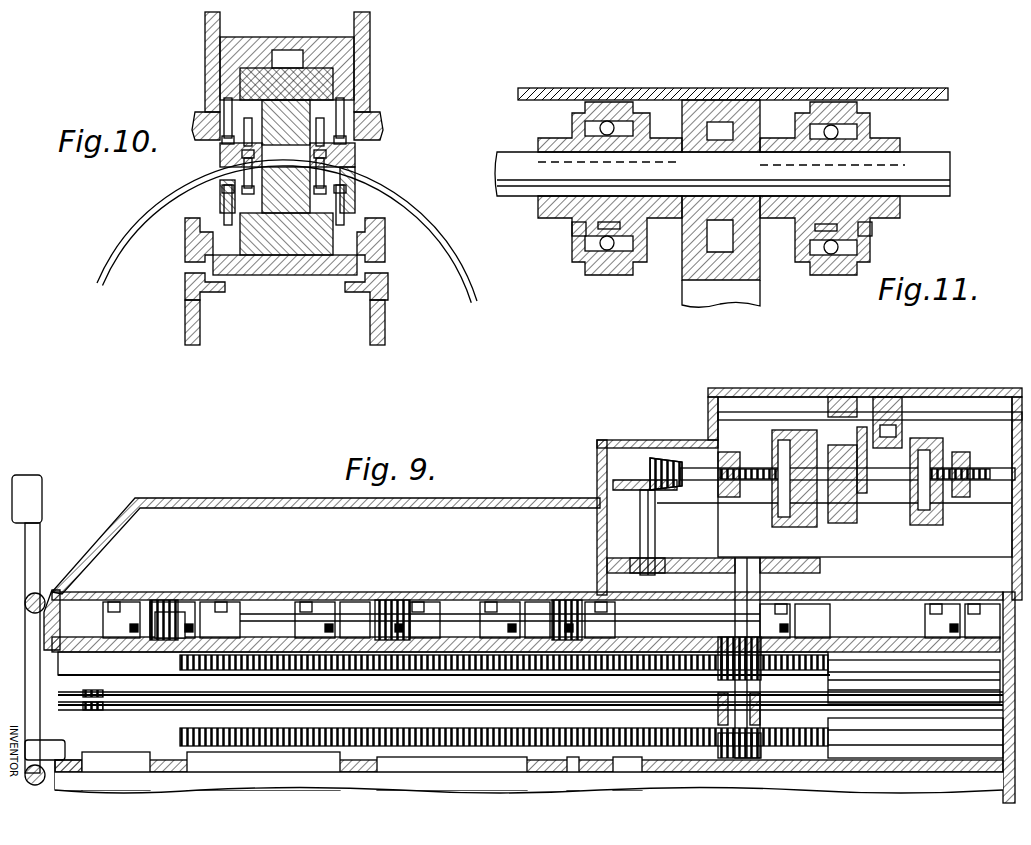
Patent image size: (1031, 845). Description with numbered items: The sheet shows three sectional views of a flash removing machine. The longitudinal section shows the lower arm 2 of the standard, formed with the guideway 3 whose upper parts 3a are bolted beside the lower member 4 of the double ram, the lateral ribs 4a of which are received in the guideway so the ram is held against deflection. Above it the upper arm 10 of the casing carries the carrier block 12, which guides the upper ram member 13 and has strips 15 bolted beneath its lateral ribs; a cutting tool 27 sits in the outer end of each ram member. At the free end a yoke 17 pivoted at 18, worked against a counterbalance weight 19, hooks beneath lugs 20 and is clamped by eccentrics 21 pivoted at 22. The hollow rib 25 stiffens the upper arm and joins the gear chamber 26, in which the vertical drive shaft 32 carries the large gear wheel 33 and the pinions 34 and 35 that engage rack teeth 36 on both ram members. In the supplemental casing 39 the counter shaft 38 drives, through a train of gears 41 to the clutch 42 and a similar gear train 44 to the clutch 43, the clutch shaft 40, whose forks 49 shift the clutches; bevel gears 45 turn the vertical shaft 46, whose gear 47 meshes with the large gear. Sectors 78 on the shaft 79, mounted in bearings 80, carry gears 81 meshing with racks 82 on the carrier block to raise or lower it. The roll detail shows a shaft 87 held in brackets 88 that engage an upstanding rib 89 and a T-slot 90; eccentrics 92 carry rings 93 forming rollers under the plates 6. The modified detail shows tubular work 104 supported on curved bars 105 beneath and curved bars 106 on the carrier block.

In FIG. 10, the arm 2 is at (192, 334).
In FIG. 9, the guideway 3 is at (885, 757).
In FIG. 10, the upper parts of guideway 3a is at (345, 205).
In FIG. 10, the lower member of double tool carrying ram 4 is at (290, 215).
In FIG. 9, the lower member of double tool carrying ram 4 is at (98, 740).
In FIG. 9, the lateral ribs 4a is at (135, 740).
In FIG. 11, the plates 6 is at (875, 88).
In FIG. 10, the upper arm 10 is at (370, 40).
In FIG. 9, the upper arm 10 is at (92, 595).
In FIG. 10, the carrier block 12 is at (210, 42).
In FIG. 9, the carrier block 12 is at (248, 637).
In FIG. 10, the upper member of double ram 13 is at (333, 85).
In FIG. 9, the upper member of double ram 13 is at (78, 660).
In FIG. 10, the strips 15 is at (240, 120).
In FIG. 9, the strips 15 is at (555, 672).
In FIG. 9, the yoke 17 is at (26, 640).
In FIG. 9, the pivot 18 is at (27, 600).
In FIG. 9, the counterbalance weight 19 is at (28, 475).
In FIG. 9, the lugs 20 is at (34, 745).
In FIG. 9, the eccentrics 21 is at (25, 770).
In FIG. 9, the pivot of eccentrics 22 is at (45, 778).
In FIG. 9, the hollow rib 25 is at (250, 500).
In FIG. 9, the gear chamber 26 is at (1000, 600).
In FIG. 9, the cutting tool 27 is at (98, 692).
In FIG. 9, the vertical drive shaft 32 is at (728, 690).
In FIG. 9, the large gear wheel 33 is at (822, 568).
In FIG. 9, the pinion 34 is at (752, 740).
In FIG. 9, the pinion 35 is at (718, 640).
In FIG. 9, the rack teeth 36 is at (436, 665).
In FIG. 9, the counter shaft 38 is at (962, 412).
In FIG. 9, the supplemental casing 39 is at (775, 390).
In FIG. 9, the clutch shaft 40 is at (722, 480).
In FIG. 9, the train of gears 41 is at (843, 398).
In FIG. 9, the clutch 42 is at (795, 515).
In FIG. 9, the clutch 43 is at (925, 525).
In FIG. 9, the gear train 44 is at (892, 398).
In FIG. 9, the bevel gears 45 is at (662, 468).
In FIG. 9, the vertical shaft 46 is at (655, 530).
In FIG. 9, the gear 47 is at (640, 573).
In FIG. 9, the fork 49 is at (732, 497).
In FIG. 9, the sectors 78 is at (158, 604).
In FIG. 9, the shaft 79 is at (455, 620).
In FIG. 9, the bearings 80 is at (118, 602).
In FIG. 9, the gear 81 is at (165, 604).
In FIG. 9, the racks 82 is at (140, 624).
In FIG. 11, the shaft 87 is at (920, 168).
In FIG. 11, the brackets 88 is at (688, 272).
In FIG. 10, the upstanding rib 89 is at (385, 230).
In FIG. 10, the T-slot 90 is at (378, 268).
In FIG. 11, the eccentric 92 is at (560, 212).
In FIG. 11, the ring 93 is at (586, 272).
In FIG. 10, the tubular work 104 is at (115, 255).
In FIG. 10, the bars 105 is at (235, 176).
In FIG. 10, the bars 106 is at (232, 155).